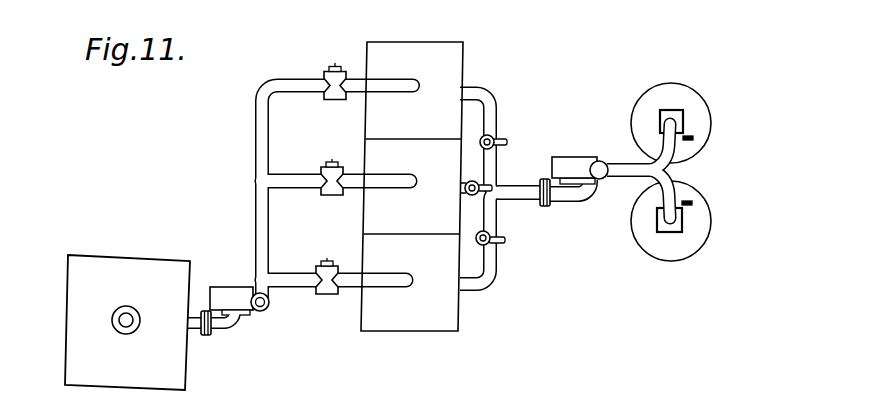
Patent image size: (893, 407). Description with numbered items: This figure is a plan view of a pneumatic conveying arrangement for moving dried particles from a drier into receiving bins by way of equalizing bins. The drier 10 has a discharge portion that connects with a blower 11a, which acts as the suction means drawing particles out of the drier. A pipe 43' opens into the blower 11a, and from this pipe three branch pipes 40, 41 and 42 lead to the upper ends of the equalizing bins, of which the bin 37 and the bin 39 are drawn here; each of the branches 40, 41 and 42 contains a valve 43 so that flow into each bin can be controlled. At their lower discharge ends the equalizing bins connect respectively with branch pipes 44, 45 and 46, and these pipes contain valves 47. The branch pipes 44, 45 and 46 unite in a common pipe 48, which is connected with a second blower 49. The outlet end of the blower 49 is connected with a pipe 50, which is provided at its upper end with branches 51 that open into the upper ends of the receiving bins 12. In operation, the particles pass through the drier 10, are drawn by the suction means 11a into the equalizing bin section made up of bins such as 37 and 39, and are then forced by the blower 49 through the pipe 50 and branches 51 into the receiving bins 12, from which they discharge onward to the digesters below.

The drier 10 is at (148, 272).
The blower 11a is at (242, 259).
The receiving bin 12 is at (689, 99).
The equalizing bin 37 is at (449, 59).
The equalizing bin 39 is at (425, 325).
The branch pipe 40 is at (288, 83).
The branch pipe 41 is at (297, 180).
The branch pipe 42 is at (290, 273).
The valve 43 is at (333, 155).
The pipe 43' is at (272, 329).
The branch pipe 44 is at (474, 93).
The branch pipe 45 is at (465, 182).
The branch pipe 46 is at (462, 291).
The valve 47 is at (508, 146).
The pipe 48 is at (521, 194).
The blower 49 is at (577, 157).
The pipe 50 is at (599, 192).
The branch 51 is at (668, 148).